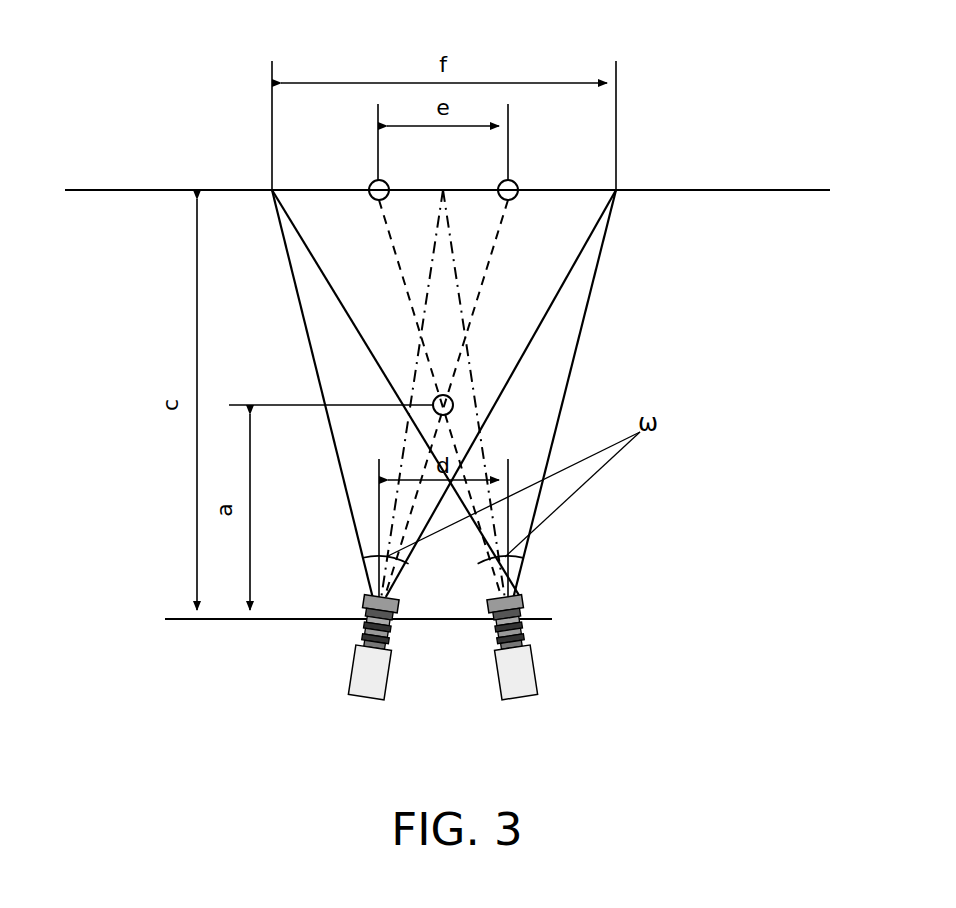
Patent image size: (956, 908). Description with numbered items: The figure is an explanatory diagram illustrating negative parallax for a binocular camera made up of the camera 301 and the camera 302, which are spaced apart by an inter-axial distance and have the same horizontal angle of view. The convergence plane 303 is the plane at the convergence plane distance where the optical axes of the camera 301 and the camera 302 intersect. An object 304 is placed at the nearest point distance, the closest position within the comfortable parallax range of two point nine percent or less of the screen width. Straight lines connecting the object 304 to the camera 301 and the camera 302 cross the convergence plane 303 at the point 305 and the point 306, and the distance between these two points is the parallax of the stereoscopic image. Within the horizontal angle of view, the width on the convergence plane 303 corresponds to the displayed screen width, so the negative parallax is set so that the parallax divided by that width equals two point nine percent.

The camera 301 is at (352, 660).
The camera 302 is at (546, 660).
The convergence plane 303 is at (690, 188).
The object 304 is at (446, 397).
The point 305 is at (514, 183).
The point 306 is at (374, 183).